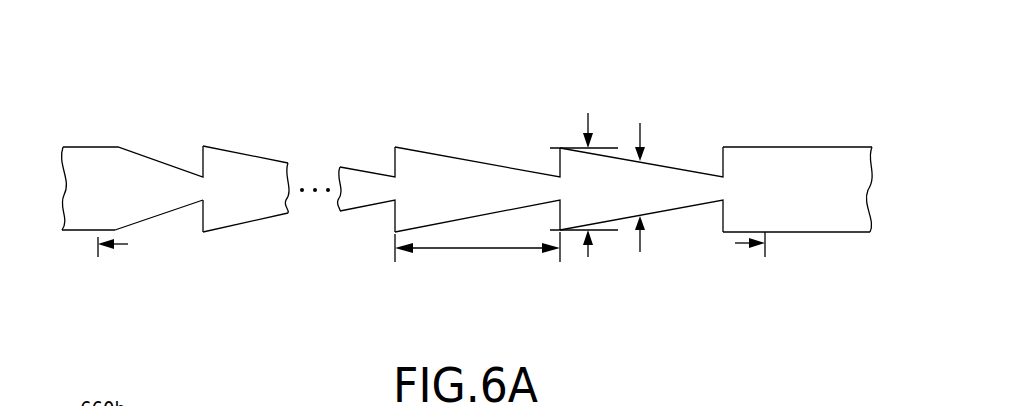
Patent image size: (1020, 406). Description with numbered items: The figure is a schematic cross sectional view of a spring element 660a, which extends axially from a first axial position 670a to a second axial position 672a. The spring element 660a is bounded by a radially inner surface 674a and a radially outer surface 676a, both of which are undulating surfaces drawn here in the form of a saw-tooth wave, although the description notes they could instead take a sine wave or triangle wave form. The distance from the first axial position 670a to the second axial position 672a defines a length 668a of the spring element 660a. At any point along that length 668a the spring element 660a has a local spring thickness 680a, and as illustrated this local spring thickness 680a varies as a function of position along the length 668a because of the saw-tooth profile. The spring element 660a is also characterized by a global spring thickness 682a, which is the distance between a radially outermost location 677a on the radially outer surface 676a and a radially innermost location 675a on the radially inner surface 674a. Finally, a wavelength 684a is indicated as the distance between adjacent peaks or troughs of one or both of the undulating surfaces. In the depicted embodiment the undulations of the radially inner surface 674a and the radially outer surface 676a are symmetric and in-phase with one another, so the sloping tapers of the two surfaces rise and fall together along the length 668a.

The spring element 660a is at (146, 93).
The first axial position 670a is at (77, 147).
The radially inner surface 674a is at (158, 212).
The radially outer surface 676a is at (243, 154).
The wavelength 684a is at (470, 252).
The radially outermost location 677a is at (560, 147).
The radially innermost location 675a is at (562, 232).
The global spring thickness 682a is at (588, 259).
The local spring thickness 680a is at (640, 130).
The second axial position 672a is at (787, 147).
The length 668a is at (735, 244).